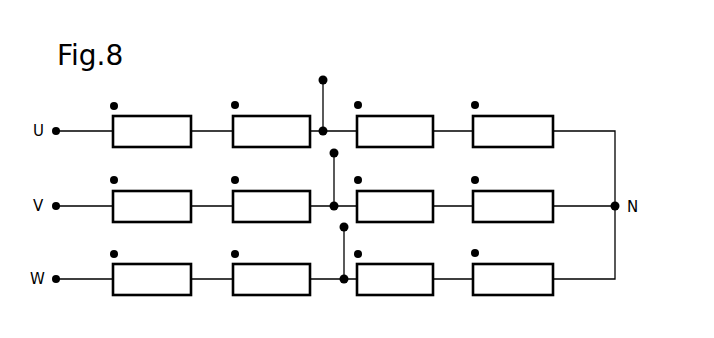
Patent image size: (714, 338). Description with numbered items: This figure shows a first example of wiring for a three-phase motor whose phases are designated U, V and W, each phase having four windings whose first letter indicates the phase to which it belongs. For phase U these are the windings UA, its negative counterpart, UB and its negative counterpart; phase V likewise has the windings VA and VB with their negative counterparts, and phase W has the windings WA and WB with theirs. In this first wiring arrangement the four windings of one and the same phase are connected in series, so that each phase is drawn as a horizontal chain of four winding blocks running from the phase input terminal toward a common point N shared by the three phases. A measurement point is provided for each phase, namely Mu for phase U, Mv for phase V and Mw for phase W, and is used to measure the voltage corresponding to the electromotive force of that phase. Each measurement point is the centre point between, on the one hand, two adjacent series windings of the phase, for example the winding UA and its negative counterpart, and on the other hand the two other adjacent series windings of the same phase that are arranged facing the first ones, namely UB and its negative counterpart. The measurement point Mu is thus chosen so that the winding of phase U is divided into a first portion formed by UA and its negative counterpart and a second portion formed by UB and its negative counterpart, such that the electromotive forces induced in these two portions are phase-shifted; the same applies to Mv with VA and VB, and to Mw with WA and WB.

The winding + UA is at (150, 121).
The winding + UB is at (393, 121).
The winding + VA is at (150, 196).
The winding + VB is at (393, 196).
The winding + WA is at (150, 269).
The winding + WB is at (393, 269).
The measurement point Mu is at (319, 96).
The measurement point Mv is at (323, 180).
The measurement point Mw is at (328, 253).